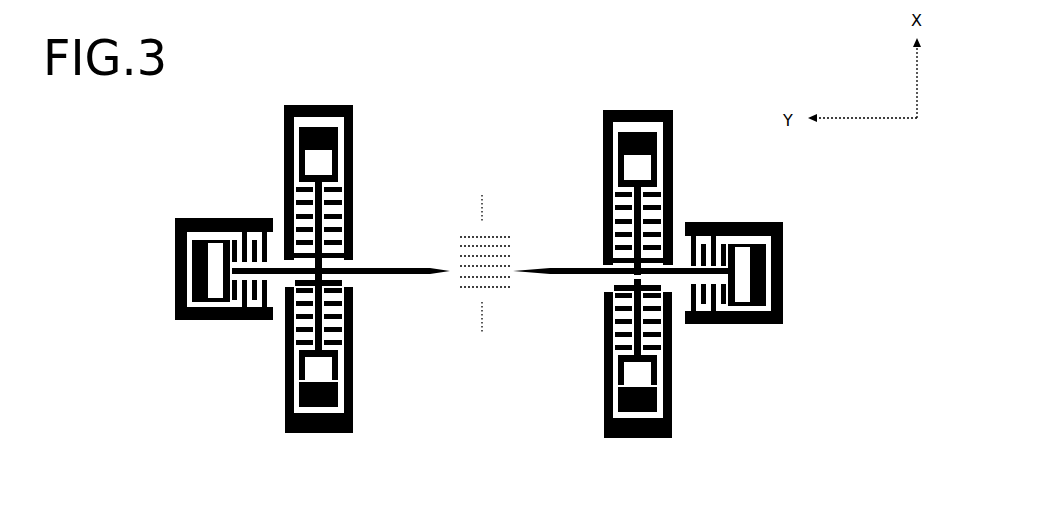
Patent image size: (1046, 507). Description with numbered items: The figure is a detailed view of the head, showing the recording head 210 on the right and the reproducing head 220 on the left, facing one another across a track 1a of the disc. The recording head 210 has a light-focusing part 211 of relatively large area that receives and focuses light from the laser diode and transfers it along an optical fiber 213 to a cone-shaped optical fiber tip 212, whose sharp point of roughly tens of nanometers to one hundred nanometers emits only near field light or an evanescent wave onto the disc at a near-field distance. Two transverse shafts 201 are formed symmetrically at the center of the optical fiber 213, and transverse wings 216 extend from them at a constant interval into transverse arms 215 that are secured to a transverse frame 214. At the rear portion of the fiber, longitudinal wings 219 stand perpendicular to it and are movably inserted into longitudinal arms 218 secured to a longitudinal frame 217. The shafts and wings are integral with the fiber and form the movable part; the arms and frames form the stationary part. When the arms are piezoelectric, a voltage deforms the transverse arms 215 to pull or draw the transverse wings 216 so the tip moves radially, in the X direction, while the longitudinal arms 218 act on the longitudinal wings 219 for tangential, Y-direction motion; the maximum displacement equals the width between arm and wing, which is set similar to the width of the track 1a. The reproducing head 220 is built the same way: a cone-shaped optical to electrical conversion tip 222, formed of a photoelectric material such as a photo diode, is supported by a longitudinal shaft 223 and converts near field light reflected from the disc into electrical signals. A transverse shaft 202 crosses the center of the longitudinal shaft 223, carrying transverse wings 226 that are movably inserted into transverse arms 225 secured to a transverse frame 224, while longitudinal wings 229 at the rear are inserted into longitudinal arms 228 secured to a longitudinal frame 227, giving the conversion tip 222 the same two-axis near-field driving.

The track 1a is at (492, 247).
The transverse shafts 201 is at (673, 178).
The transverse shaft 202 is at (322, 188).
The recording head 210 is at (713, 54).
The light-focusing part 211 is at (786, 261).
The optical fiber tip 212 is at (512, 272).
The optical fiber 213 is at (552, 268).
The transverse frame 214 is at (648, 134).
The transverse arms 215 is at (612, 194).
The transverse wings 216 is at (673, 203).
The longitudinal frame 217 is at (772, 323).
The longitudinal arms 218 is at (747, 222).
The longitudinal wings 219 is at (697, 324).
The reproducing head 220 is at (370, 54).
The optical to electrical conversion tip 222 is at (441, 267).
The longitudinal shaft 223 is at (440, 275).
The transverse frame 224 is at (337, 124).
The transverse arms 225 is at (353, 200).
The transverse wings 226 is at (307, 200).
The longitudinal frame 227 is at (181, 258).
The longitudinal arms 228 is at (213, 217).
The longitudinal wings 229 is at (259, 320).